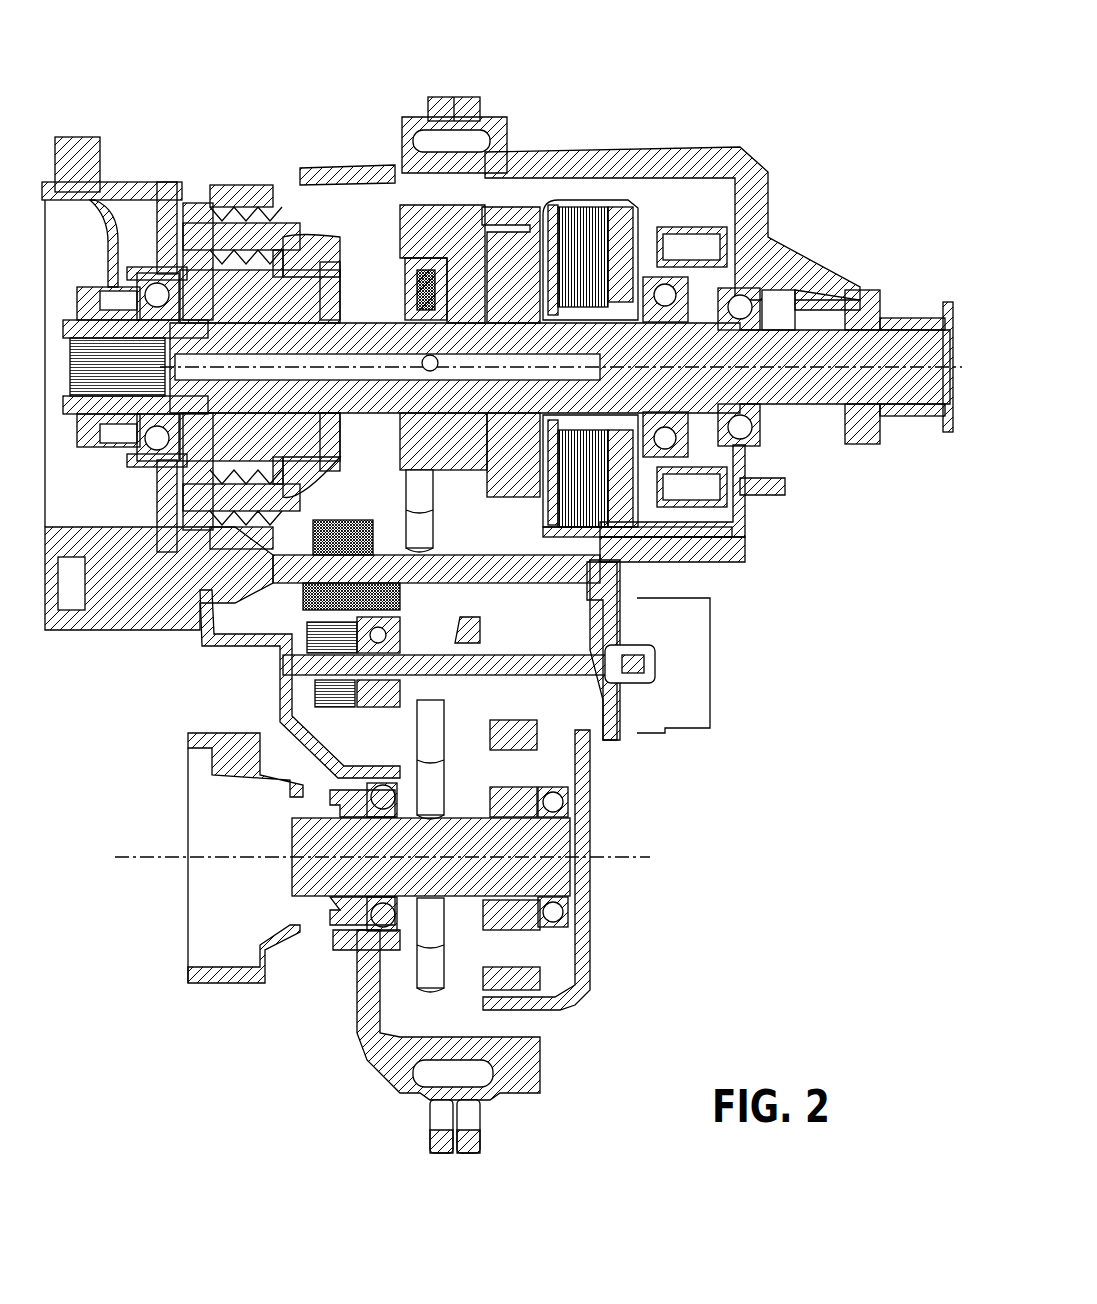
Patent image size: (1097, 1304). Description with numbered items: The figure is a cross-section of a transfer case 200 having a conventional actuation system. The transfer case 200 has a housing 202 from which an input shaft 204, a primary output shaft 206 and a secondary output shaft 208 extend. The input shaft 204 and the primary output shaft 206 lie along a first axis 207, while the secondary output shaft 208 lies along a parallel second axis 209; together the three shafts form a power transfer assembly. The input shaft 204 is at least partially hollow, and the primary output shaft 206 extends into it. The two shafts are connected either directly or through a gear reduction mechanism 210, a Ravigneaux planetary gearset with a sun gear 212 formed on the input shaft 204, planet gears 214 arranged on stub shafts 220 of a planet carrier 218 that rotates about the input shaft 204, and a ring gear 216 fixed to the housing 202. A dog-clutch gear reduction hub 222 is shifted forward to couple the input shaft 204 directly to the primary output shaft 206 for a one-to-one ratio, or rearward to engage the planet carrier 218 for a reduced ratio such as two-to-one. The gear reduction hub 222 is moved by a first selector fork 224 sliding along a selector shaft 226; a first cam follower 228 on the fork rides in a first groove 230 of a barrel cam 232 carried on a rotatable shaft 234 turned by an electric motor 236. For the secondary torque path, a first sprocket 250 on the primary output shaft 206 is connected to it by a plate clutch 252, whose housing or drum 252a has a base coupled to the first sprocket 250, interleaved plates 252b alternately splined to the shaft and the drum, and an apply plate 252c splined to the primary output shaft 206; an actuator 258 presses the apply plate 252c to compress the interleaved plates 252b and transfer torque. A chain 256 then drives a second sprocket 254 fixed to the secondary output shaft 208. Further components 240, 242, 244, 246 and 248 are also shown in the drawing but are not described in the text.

The transfer case 200 is at (850, 78).
The housing 202 is at (748, 158).
The input shaft 204 is at (92, 283).
The primary output shaft 206 is at (912, 335).
The first axis 207 is at (848, 360).
The secondary output shaft 208 is at (217, 730).
The second axis 209 is at (160, 857).
The gear reduction mechanism 210 is at (308, 167).
The sun gear 212 is at (275, 270).
The planet gears 214 is at (222, 203).
The ring gear 216 is at (234, 192).
The planet carrier 218 is at (303, 215).
The stub shafts 220 is at (198, 238).
The gear reduction hub 222 is at (303, 277).
The first selector fork 224 is at (335, 530).
The selector shaft 226 is at (273, 563).
The first cam follower 228 is at (352, 630).
The first groove 230 is at (307, 655).
The barrel cam 232 is at (470, 623).
The rotatable shaft 234 is at (618, 668).
The electric motor 236 is at (712, 650).
The bolt 240 is at (418, 248).
The bolt 242 is at (428, 485).
The hub 244 is at (340, 372).
The hole 246 is at (428, 358).
The main shaft 248 is at (545, 385).
The first sprocket 250 is at (490, 237).
The plate clutch 252 is at (780, 106).
The housing or drum 252a is at (570, 205).
The interleaved plates 252b is at (598, 205).
The apply plate 252c is at (618, 213).
The second sprocket 254 is at (525, 977).
The chain 256 is at (545, 1005).
The actuator 258 is at (700, 248).